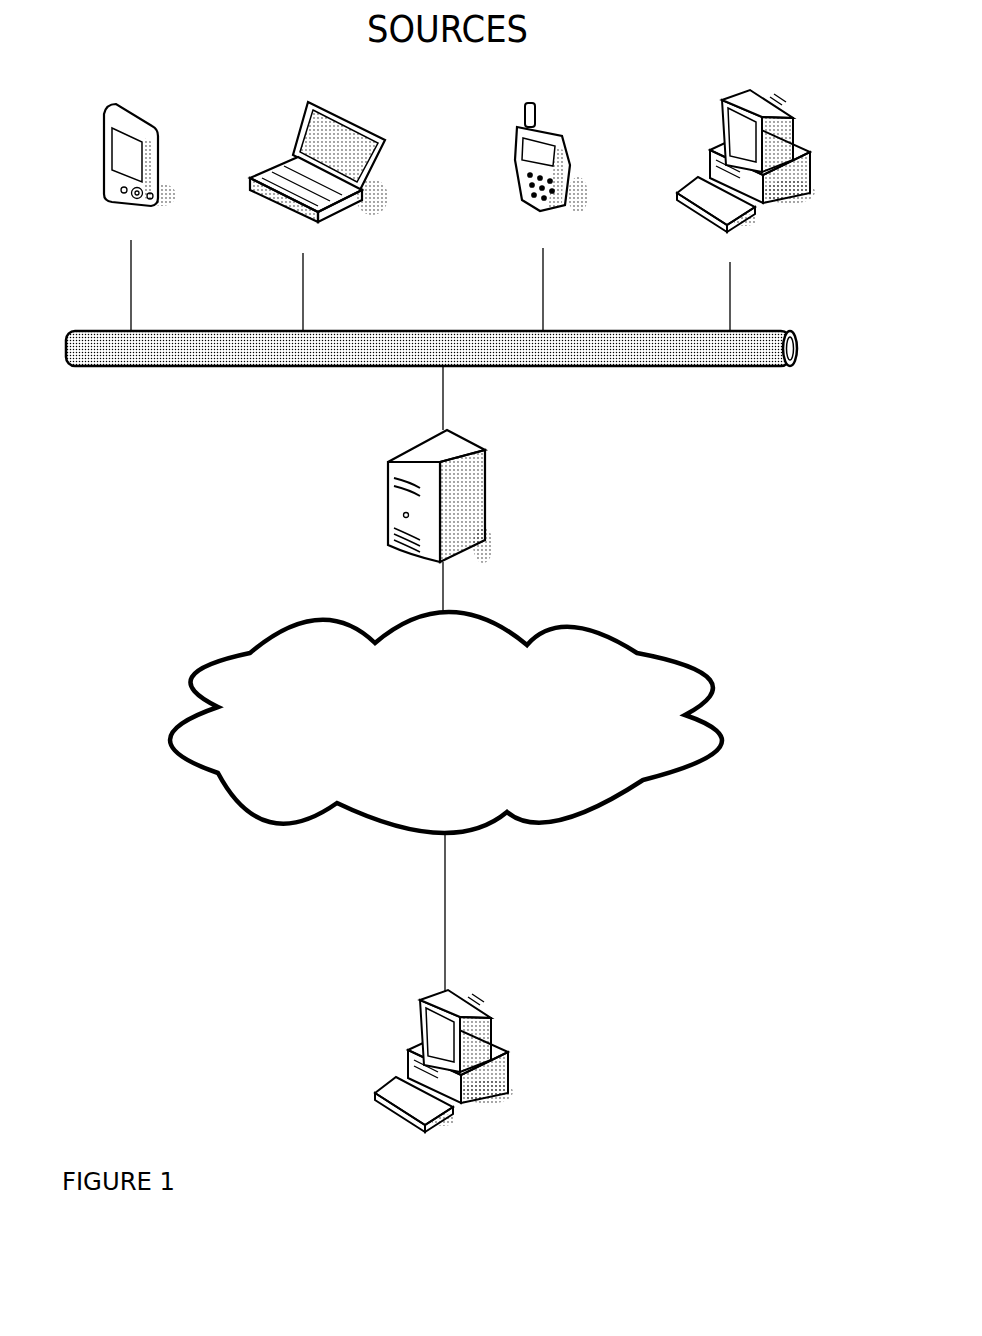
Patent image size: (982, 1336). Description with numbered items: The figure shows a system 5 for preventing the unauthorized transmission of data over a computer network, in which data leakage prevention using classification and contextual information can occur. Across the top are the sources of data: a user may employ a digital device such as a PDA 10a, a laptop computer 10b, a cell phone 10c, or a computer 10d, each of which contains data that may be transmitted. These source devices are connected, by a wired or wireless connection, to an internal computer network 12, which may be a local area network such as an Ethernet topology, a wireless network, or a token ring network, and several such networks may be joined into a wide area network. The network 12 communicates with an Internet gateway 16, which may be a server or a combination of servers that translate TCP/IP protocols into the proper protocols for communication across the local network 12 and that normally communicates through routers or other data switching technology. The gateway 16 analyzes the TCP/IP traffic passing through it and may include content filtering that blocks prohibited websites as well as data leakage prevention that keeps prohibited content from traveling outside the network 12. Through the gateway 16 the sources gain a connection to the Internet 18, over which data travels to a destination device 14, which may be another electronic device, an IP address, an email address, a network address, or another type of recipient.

The system 5 is at (112, 495).
The PDA 10a is at (121, 112).
The laptop computer 10b is at (337, 108).
The cell phone 10c is at (547, 120).
The computer 10d is at (782, 100).
The computer network 12 is at (770, 366).
The destination device 14 is at (493, 1038).
The Internet gateway 16 is at (486, 519).
The Internet 18 is at (702, 710).